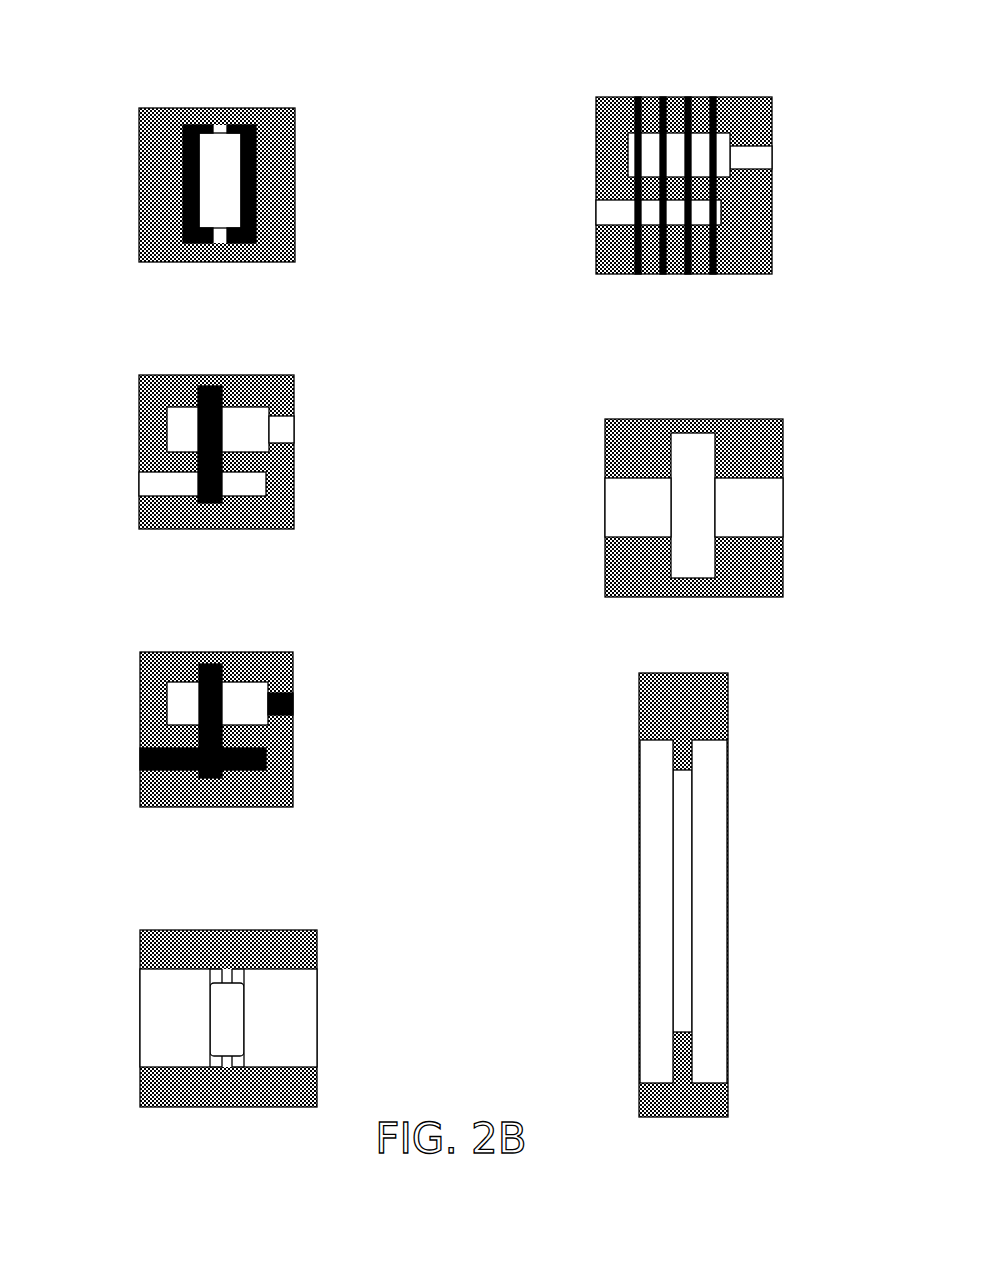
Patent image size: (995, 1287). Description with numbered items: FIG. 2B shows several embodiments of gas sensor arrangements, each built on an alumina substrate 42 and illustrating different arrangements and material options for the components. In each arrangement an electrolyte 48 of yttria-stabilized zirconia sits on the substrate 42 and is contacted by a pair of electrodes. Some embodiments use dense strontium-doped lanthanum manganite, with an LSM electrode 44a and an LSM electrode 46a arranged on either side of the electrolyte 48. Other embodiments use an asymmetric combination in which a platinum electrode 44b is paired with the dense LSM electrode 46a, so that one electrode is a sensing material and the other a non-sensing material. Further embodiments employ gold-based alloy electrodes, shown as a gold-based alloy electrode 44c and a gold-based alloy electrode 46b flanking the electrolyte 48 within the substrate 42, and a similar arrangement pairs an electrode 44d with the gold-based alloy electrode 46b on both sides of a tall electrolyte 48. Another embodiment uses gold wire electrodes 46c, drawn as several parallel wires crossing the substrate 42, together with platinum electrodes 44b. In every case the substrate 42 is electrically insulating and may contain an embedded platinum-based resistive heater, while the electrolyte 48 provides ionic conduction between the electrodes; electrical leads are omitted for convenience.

The substrate 42 is at (295, 192).
The dense LSM electrode 44a is at (183, 122).
The Pt electrode 44b is at (294, 428).
The gold-based alloy electrode 44c is at (140, 1020).
The fourth conductive pattern 44d is at (605, 512).
The dense LSM electrode 46a is at (228, 125).
The gold-based alloy electrode 46b is at (317, 1018).
The gold wire electrodes 46c is at (638, 97).
The electrolyte 48 is at (215, 128).